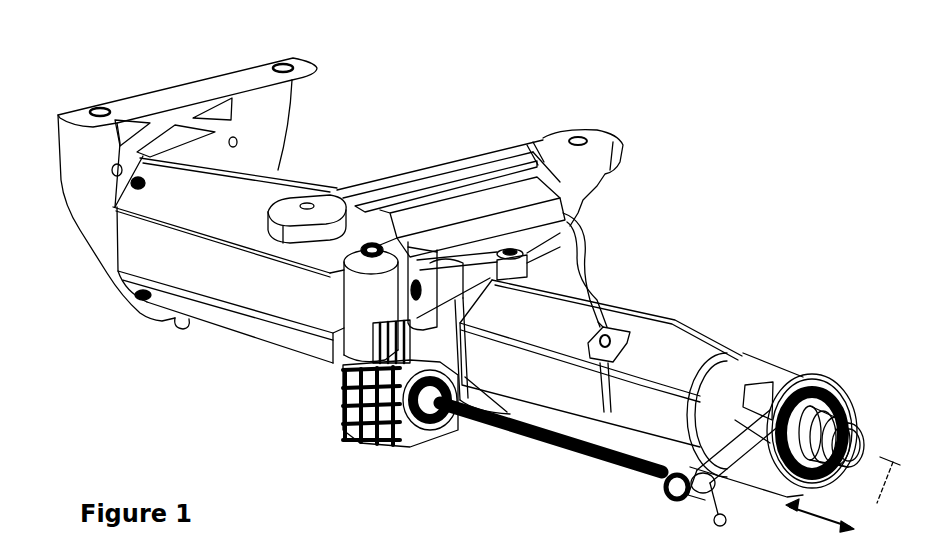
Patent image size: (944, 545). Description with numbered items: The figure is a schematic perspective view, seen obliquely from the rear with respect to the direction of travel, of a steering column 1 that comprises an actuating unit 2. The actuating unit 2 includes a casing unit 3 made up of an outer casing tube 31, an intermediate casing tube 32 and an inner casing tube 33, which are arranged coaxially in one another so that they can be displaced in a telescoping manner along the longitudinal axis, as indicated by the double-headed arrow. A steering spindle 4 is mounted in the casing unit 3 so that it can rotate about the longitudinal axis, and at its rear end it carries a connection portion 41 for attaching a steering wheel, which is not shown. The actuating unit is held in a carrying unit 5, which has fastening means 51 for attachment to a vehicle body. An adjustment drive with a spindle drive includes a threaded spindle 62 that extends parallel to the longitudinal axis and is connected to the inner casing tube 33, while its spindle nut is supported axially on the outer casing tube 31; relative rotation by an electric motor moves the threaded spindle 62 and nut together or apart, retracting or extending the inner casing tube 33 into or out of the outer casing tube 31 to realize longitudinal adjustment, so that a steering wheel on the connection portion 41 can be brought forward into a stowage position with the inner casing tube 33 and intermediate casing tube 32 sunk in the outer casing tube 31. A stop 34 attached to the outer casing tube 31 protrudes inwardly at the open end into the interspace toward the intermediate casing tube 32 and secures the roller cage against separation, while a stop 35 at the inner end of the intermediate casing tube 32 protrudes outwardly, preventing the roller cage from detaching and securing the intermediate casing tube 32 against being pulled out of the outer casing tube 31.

The steering column 1 is at (650, 102).
The actuating unit 2 is at (333, 174).
The casing unit 3 is at (281, 180).
The steering spindle 4 is at (807, 376).
The carrying unit 5 is at (87, 173).
The outer casing tube 31 is at (235, 293).
The intermediate casing tube 32 is at (543, 387).
The inner casing tube 33 is at (713, 345).
The stop 34 is at (560, 262).
The stop 35 is at (620, 357).
The connection portion 41 is at (813, 420).
The fastening means 51 is at (277, 64).
The threaded spindle 62 is at (598, 475).